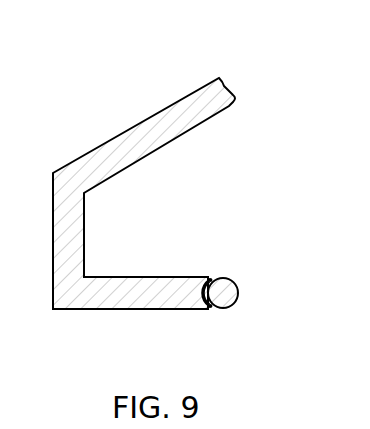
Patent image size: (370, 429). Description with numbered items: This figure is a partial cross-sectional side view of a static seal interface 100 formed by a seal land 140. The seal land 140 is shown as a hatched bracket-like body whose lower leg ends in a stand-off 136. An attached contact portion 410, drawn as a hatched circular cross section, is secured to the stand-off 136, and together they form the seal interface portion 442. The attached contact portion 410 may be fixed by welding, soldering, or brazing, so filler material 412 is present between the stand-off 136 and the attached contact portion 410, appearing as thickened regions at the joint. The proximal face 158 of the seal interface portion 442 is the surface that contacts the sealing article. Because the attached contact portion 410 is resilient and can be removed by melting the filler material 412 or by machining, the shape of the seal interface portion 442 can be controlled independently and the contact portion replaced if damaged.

The static seal interface 100 is at (129, 218).
The stand-off 136 is at (129, 277).
The seal land 140 is at (129, 230).
The proximal face 158 is at (234, 305).
The attached contact portion 410 is at (251, 304).
The filler material 412 is at (211, 278).
The seal interface portion 442 is at (167, 319).